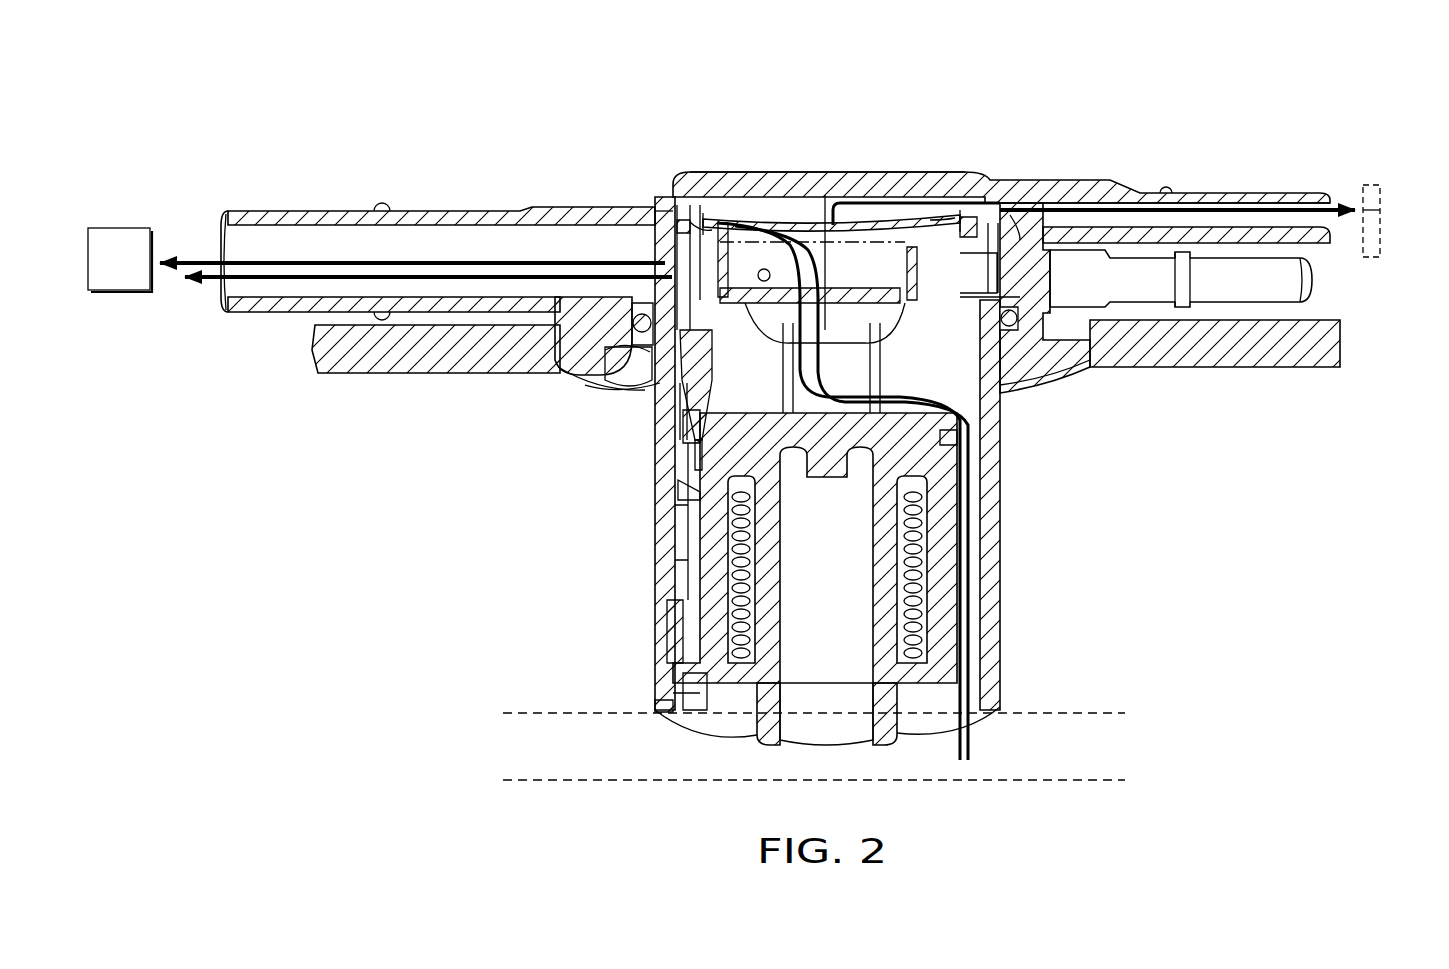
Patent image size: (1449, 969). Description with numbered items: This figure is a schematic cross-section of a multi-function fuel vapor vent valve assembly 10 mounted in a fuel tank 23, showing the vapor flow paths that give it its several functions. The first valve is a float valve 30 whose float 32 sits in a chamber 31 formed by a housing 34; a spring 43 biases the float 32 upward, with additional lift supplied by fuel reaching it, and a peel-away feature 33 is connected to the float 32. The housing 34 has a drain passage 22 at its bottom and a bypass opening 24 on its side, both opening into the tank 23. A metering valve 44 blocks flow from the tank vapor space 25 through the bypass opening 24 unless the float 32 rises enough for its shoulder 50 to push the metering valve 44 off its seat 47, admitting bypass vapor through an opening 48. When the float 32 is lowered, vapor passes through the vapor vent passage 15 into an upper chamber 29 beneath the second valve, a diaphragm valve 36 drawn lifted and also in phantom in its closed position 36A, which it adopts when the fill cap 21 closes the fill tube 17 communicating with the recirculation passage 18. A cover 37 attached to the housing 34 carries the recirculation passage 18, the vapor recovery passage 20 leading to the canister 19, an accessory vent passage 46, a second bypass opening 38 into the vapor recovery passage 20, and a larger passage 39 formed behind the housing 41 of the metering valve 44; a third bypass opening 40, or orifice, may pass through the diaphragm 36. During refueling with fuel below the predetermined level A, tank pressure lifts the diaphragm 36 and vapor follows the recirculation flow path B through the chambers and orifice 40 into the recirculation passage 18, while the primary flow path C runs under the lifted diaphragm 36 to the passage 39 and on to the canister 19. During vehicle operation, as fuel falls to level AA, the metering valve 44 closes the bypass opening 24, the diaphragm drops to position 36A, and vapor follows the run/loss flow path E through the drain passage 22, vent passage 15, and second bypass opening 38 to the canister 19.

The valve assembly 10 is at (1127, 433).
The vapor vent passage 15 is at (963, 273).
The fill tube 17 is at (1365, 212).
The recirculation passage 18 is at (1140, 200).
The canister 19 is at (120, 260).
The vapor recovery passage 20 is at (425, 237).
The fill cap 21 is at (1380, 190).
The drain passage 22 is at (660, 712).
The fuel tank 23 is at (413, 372).
The bypass opening 24 is at (680, 395).
The tank vapor space 25 is at (506, 432).
The upper chamber 29 is at (850, 325).
The float valve 30 is at (1025, 495).
The chamber 31 is at (895, 398).
The float 32 is at (985, 540).
The peel-away feature 33 is at (950, 432).
The housing 34 is at (665, 505).
The diaphragm valve 36 is at (890, 222).
The diaphragm in lowered position 36A is at (935, 205).
The cover 37 is at (740, 172).
The second bypass opening 38 is at (720, 275).
The passage 39 is at (695, 225).
The third bypass opening 40 is at (833, 287).
The housing of the metered orifice 41 is at (660, 215).
The spring 43 is at (740, 570).
The metering valve 44 is at (655, 382).
The accessory vent passage 46 is at (1247, 307).
The seat 47 is at (620, 365).
The opening 48 is at (665, 440).
The shoulder 50 is at (690, 480).
The primary flow path C is at (488, 262).
The recirculation flow path B is at (1220, 200).
The run/loss flow path E is at (300, 280).
The predetermined level A is at (1103, 713).
The level AA is at (1103, 780).